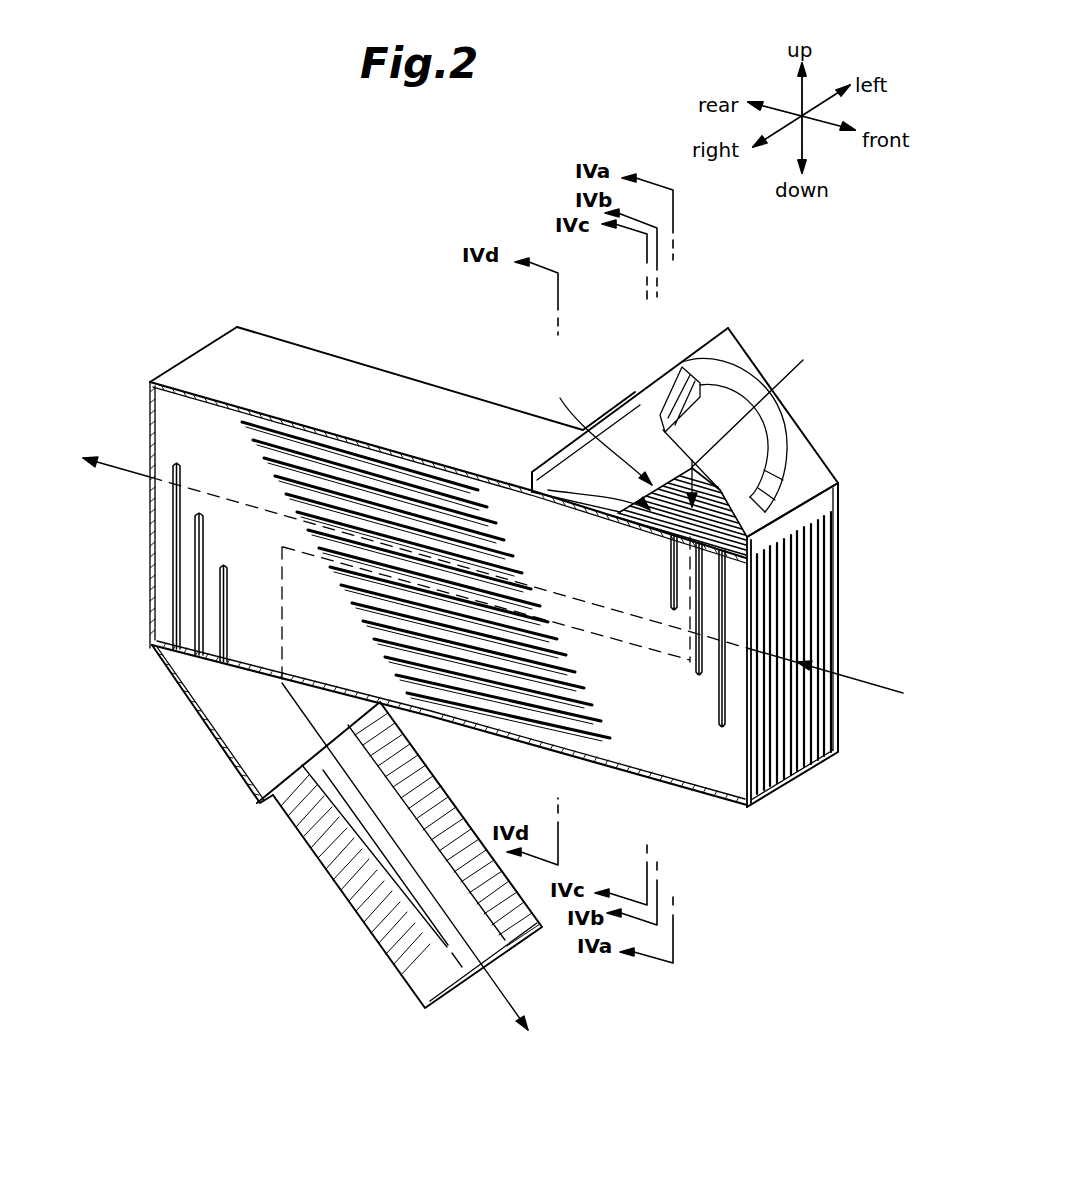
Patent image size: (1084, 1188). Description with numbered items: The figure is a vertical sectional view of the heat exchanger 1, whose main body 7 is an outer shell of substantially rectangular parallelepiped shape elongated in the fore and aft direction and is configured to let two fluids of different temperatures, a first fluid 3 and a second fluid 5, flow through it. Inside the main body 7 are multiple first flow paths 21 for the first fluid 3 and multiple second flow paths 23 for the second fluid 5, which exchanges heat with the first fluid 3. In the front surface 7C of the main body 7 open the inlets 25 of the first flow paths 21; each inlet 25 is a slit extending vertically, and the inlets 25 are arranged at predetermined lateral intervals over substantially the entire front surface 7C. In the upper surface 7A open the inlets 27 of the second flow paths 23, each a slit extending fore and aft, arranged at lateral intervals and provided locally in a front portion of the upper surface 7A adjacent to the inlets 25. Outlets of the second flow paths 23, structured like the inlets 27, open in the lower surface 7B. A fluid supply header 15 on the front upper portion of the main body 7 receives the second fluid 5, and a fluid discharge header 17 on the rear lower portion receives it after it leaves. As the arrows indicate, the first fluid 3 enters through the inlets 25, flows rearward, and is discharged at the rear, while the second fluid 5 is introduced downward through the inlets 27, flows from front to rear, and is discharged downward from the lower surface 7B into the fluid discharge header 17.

The heat exchanger 1 is at (322, 272).
The first fluid 3 is at (135, 473).
The second fluid 5 is at (790, 373).
The main body 7 is at (407, 363).
The upper surface 7A is at (598, 430).
The lower surface 7B is at (490, 740).
The front surface 7C is at (823, 505).
The fluid supply header 15 is at (747, 367).
The fluid discharge header 17 is at (232, 740).
The first flow paths 21 is at (845, 588).
The second flow paths 23 is at (598, 480).
The inlets 25 is at (833, 728).
The inlets 27 is at (543, 472).